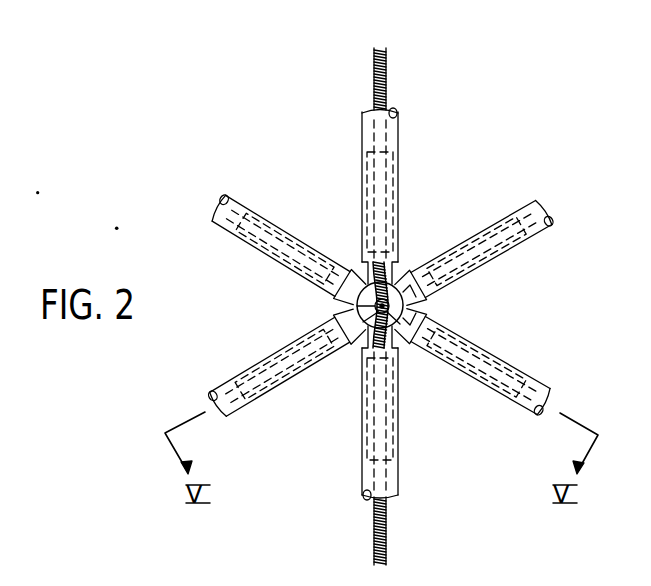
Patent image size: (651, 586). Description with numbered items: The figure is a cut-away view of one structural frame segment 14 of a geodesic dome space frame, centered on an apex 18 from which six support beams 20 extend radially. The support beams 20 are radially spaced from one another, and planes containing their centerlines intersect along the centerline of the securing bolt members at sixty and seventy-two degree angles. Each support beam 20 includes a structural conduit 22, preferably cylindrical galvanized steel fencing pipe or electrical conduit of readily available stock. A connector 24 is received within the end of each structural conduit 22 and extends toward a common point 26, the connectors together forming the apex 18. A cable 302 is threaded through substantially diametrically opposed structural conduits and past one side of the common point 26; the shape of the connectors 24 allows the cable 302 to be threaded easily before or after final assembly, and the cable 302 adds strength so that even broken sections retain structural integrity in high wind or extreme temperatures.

The cable 302 is at (385, 78).
The structural conduit 22 is at (512, 363).
The support beam 20 is at (399, 185).
The structural frame segment 14 is at (473, 230).
The apex 18 is at (413, 305).
The connector 24 is at (422, 308).
The common point 26 is at (355, 305).